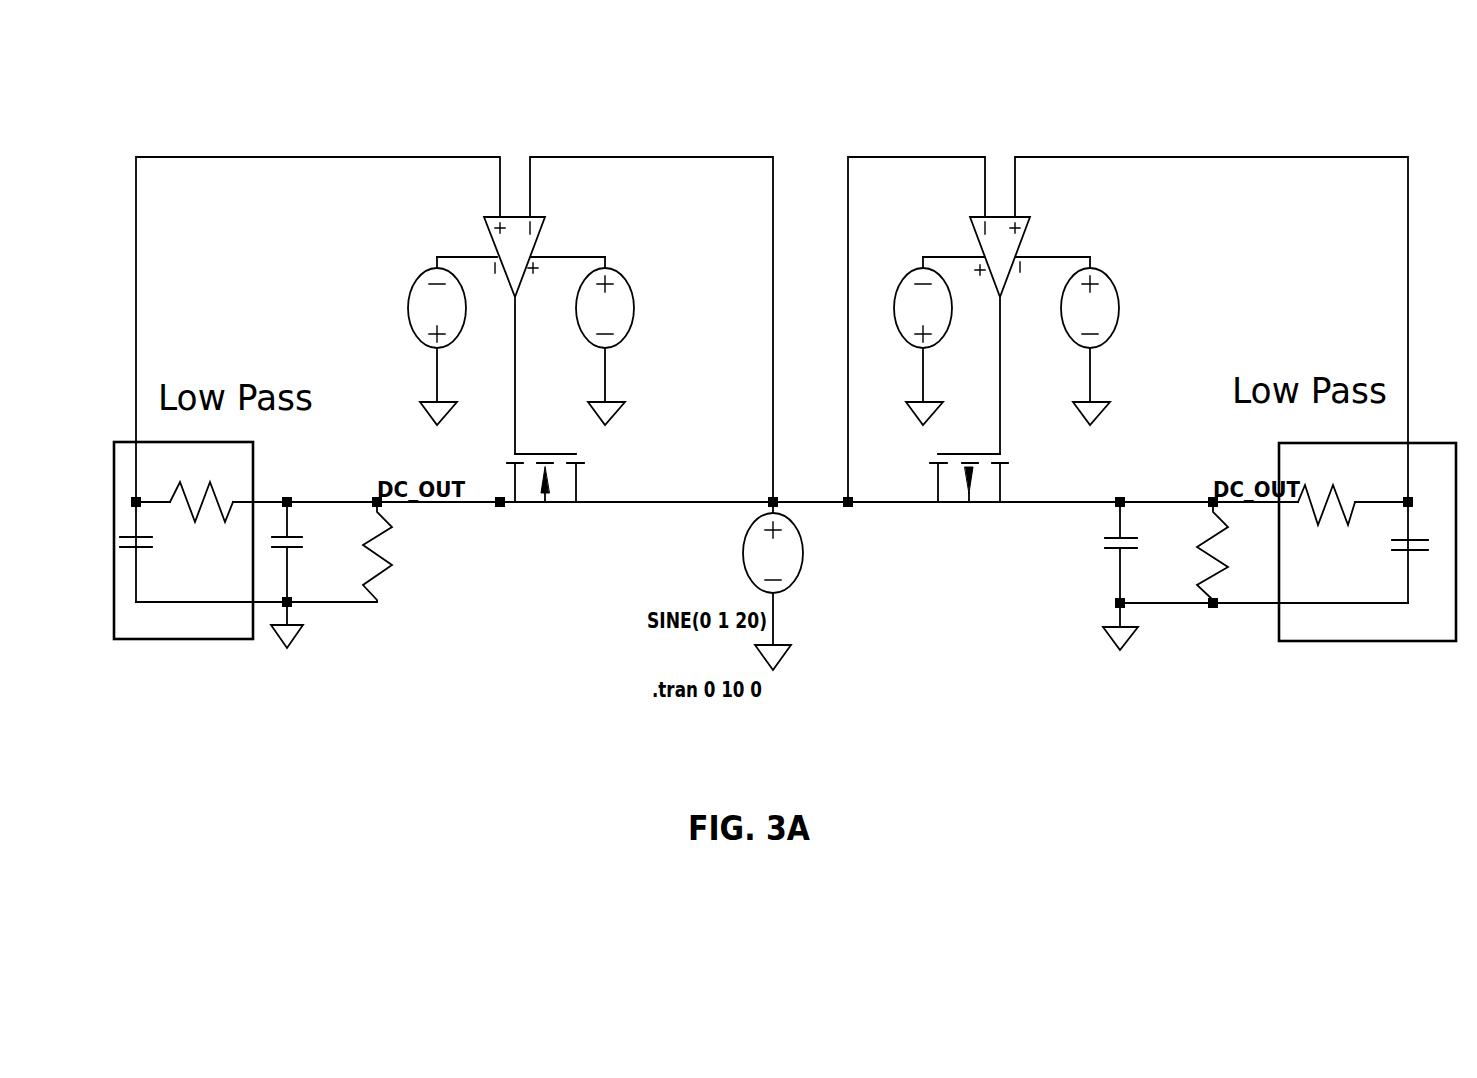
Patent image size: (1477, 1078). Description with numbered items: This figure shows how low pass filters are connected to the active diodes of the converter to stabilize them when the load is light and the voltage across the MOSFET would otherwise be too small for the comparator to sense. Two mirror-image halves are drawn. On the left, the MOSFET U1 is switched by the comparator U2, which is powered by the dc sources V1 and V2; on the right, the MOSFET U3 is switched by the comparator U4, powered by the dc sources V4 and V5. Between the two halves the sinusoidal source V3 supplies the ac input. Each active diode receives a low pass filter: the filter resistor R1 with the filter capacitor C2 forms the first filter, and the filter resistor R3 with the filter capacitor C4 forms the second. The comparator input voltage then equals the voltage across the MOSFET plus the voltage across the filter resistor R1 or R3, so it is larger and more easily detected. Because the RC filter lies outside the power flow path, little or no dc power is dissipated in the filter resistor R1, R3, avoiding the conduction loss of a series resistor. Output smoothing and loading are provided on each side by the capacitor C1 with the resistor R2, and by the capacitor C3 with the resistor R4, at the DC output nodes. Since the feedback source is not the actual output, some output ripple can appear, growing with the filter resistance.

The filter resistor R1 is at (201, 504).
The load resistor R2 (100k) R2 is at (404, 552).
The filter resistor R3 is at (1326, 506).
The load resistor R4 (100k) R4 is at (1239, 552).
The capacitor C1 (50µ) C1 is at (300, 574).
The filter capacitor C2 is at (149, 551).
The capacitor C3 (100µ) C3 is at (1139, 576).
The filter capacitor C4 is at (1423, 554).
The DC voltage source V1 is at (614, 336).
The DC voltage source V2 is at (427, 330).
The sine input voltage source V3 is at (782, 582).
The DC voltage source V4 is at (1098, 336).
The DC voltage source V5 is at (912, 330).
The MOSFET switch U1 (Si1450DH) U1 is at (545, 550).
The comparator U2 (MAX9119) U2 is at (512, 335).
The MOSFET switch U3 (Si1499DH) U3 is at (969, 550).
The comparator U4 (MAX9119) U4 is at (1000, 335).